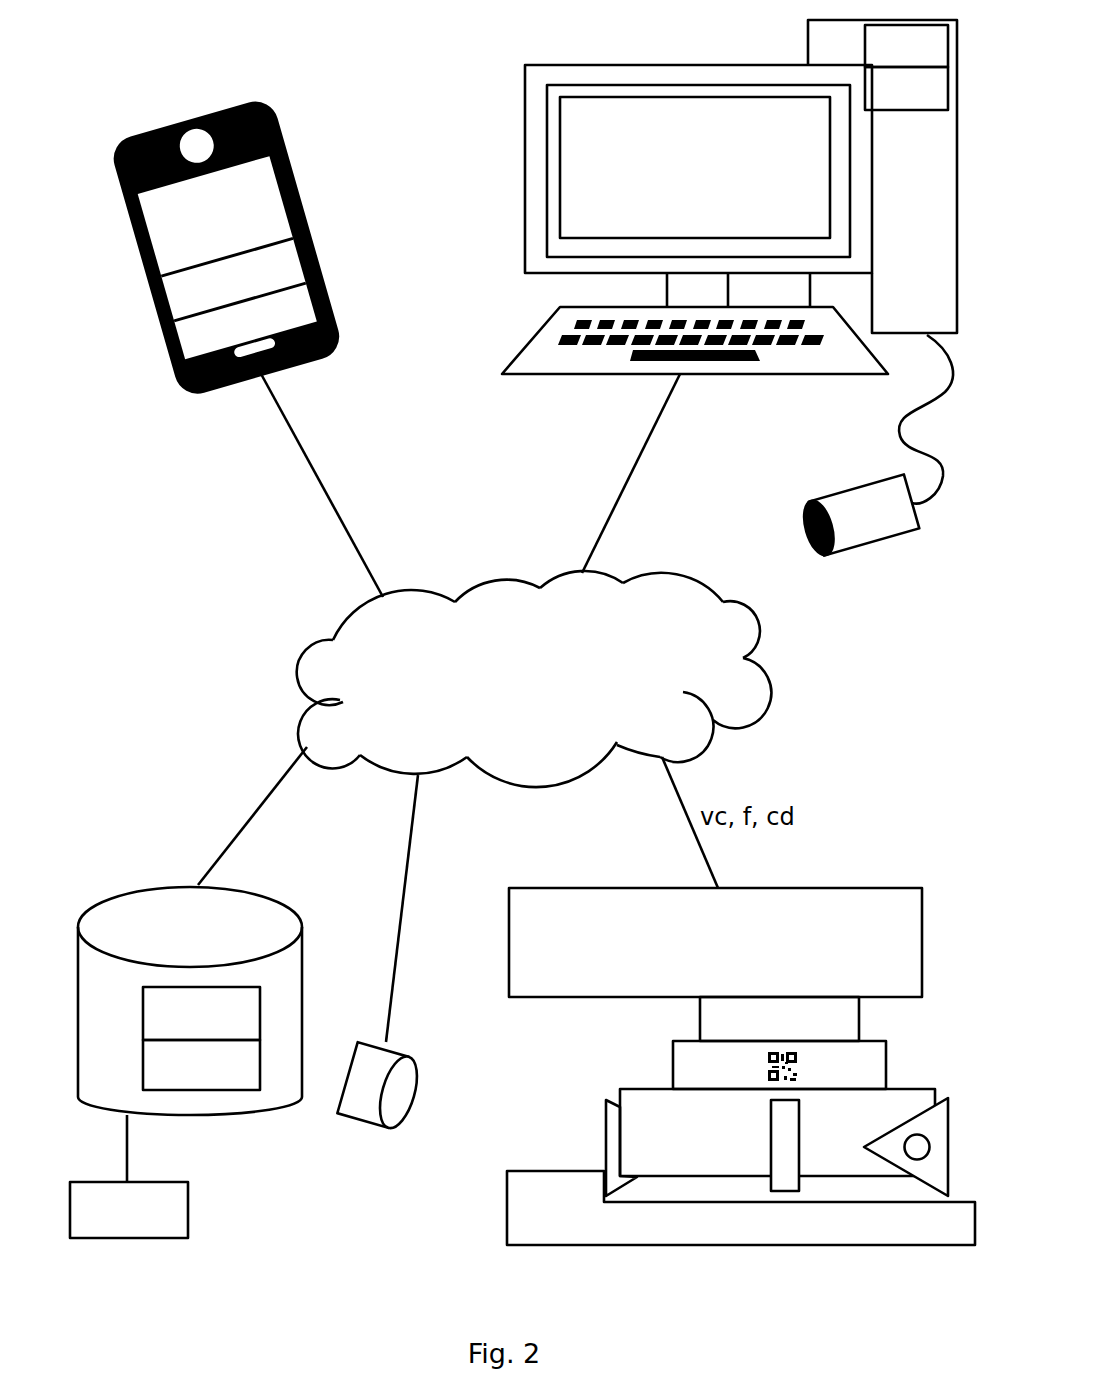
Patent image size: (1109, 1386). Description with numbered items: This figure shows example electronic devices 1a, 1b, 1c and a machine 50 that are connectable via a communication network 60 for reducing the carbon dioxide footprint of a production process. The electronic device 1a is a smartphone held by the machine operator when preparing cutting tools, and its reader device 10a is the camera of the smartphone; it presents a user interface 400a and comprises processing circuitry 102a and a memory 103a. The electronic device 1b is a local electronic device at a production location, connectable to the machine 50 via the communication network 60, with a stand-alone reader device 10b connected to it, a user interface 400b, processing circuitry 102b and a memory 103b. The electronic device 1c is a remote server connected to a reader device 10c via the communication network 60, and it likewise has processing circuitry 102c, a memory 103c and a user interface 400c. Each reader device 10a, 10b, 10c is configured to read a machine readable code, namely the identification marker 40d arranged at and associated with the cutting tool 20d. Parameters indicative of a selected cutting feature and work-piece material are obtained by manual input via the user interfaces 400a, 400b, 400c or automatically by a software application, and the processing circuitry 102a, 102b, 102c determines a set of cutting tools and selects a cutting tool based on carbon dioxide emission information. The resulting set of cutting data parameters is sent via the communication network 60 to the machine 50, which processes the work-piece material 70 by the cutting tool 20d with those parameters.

The electronic device 1a is at (217, 264).
The reader device 10a is at (177, 110).
The user interface 400a is at (215, 215).
The processing circuitry 102a is at (231, 273).
The memory 103a is at (245, 321).
The electronic device 1b is at (701, 265).
The reader device 10b is at (888, 562).
The user interface 400b is at (695, 167).
The processing circuitry 102b is at (906, 46).
The memory 103b is at (906, 88).
The communication network 60 is at (534, 679).
The electronic device 1c is at (190, 1001).
The processing circuitry 102c is at (201, 1013).
The memory 103c is at (201, 1065).
The user interface 400c is at (129, 1210).
The reader device 10c is at (370, 1147).
The machine 50 is at (855, 887).
The identification marker 40d is at (755, 1067).
The cutting tool 20d is at (772, 1096).
The work-piece material 70 is at (571, 1202).